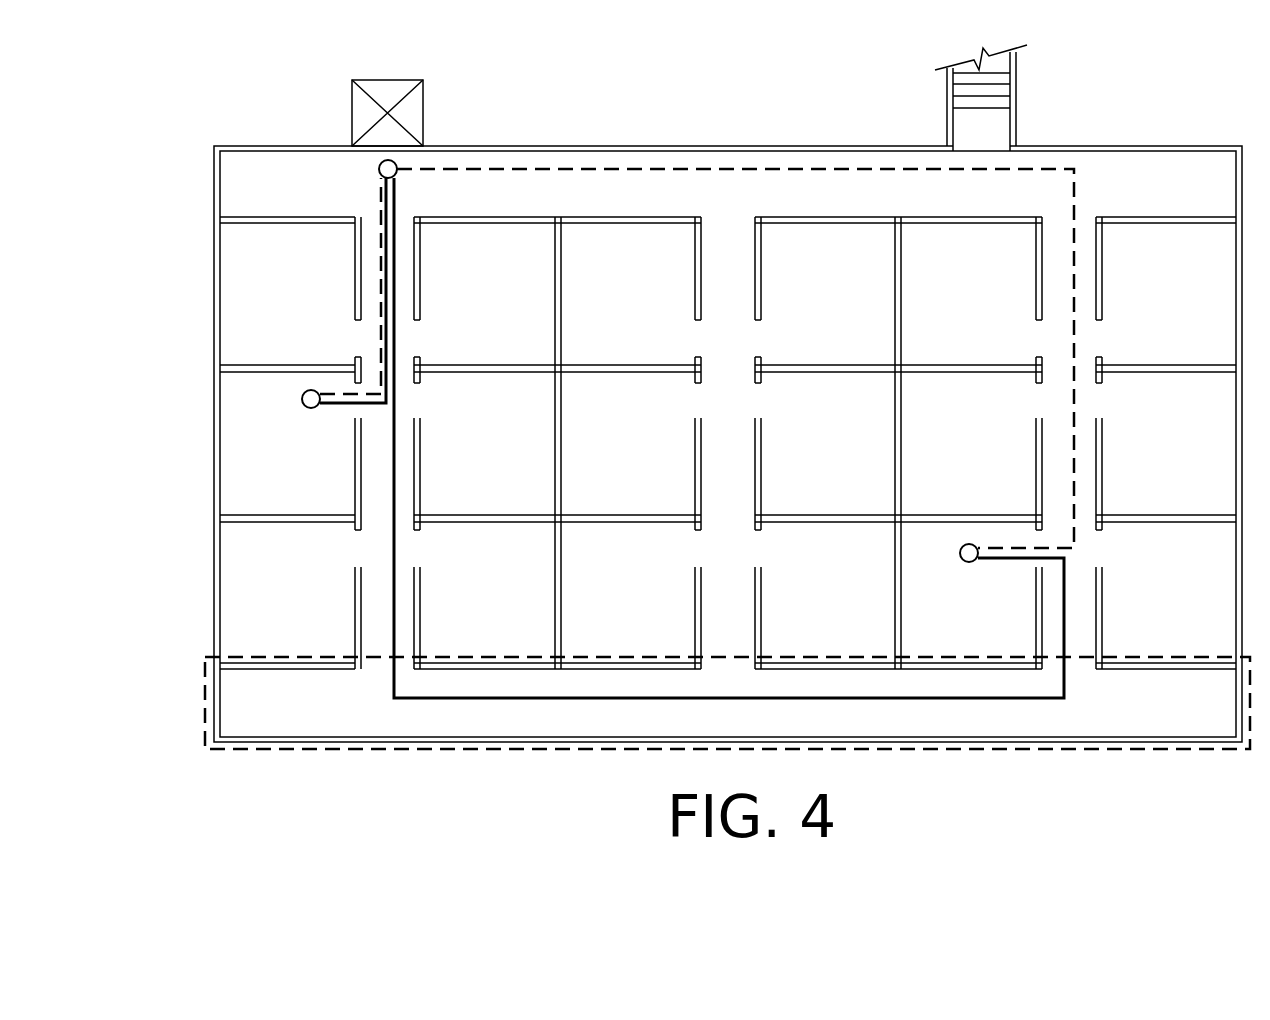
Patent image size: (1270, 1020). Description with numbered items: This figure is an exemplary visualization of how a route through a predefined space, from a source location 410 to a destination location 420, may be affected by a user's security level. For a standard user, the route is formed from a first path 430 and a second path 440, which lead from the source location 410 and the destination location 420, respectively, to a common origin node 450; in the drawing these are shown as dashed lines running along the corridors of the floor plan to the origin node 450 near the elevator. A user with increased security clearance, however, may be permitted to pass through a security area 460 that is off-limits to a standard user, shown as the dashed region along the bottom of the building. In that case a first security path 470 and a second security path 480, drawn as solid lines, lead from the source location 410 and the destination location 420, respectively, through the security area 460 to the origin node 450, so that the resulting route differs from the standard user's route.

The source location 410 is at (309, 409).
The destination location 420 is at (970, 563).
The first path 430 is at (381, 208).
The second path 440 is at (1074, 188).
The origin node 450 is at (379, 168).
The security area 460 is at (205, 704).
The first security path 470 is at (338, 405).
The second security path 480 is at (1033, 700).